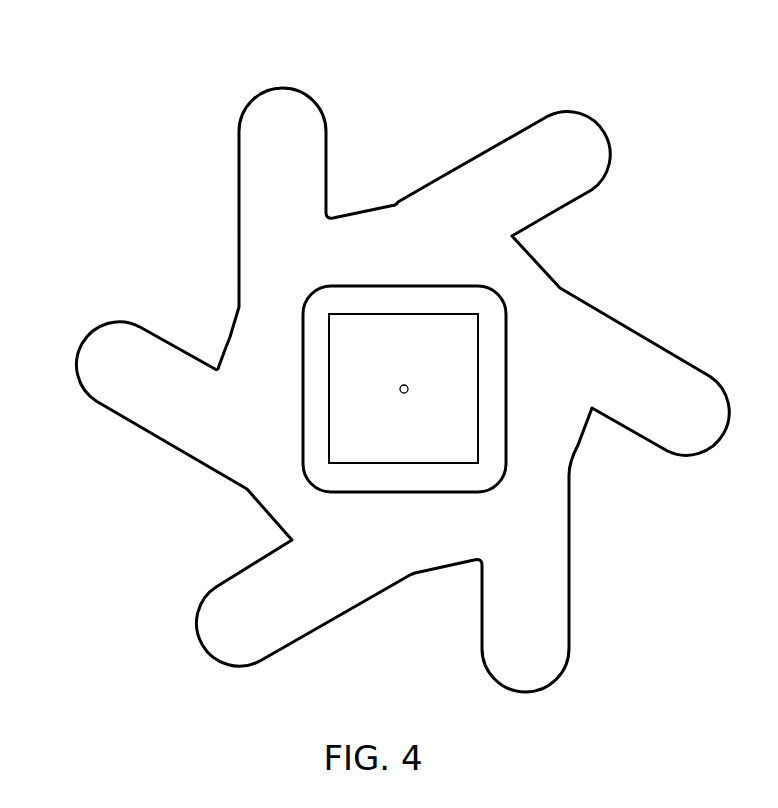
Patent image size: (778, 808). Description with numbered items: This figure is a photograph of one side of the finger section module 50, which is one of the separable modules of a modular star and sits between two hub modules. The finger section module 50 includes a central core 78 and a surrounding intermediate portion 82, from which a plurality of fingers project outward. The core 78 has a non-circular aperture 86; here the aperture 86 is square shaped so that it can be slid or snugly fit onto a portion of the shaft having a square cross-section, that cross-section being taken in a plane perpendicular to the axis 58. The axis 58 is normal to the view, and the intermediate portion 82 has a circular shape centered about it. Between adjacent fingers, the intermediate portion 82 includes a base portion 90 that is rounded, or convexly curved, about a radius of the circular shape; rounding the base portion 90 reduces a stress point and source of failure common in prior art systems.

The finger section module 50 is at (382, 356).
The axis 58 is at (403, 394).
The core 78 is at (315, 321).
The intermediate portion 82 is at (247, 335).
The aperture 86 is at (358, 398).
The base portion 90 is at (364, 207).